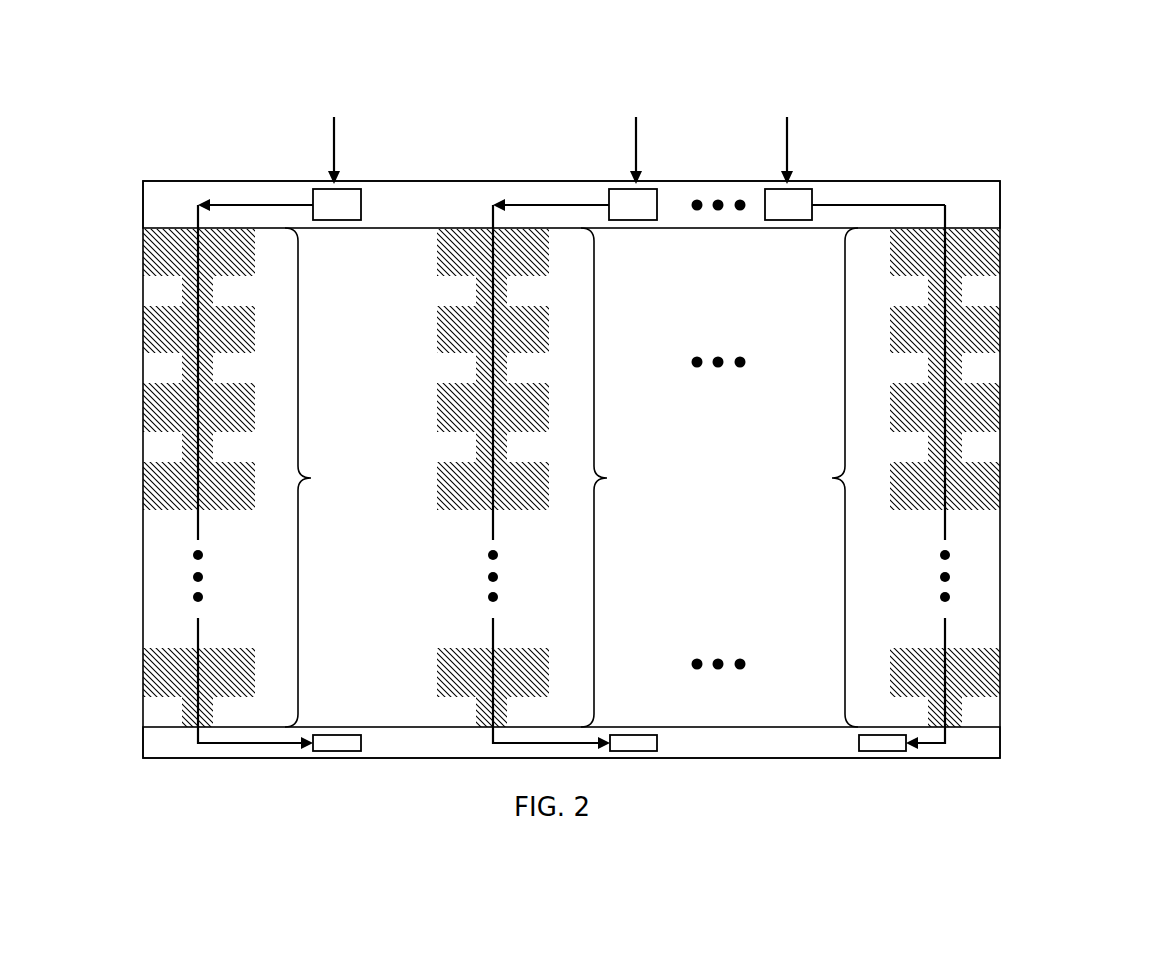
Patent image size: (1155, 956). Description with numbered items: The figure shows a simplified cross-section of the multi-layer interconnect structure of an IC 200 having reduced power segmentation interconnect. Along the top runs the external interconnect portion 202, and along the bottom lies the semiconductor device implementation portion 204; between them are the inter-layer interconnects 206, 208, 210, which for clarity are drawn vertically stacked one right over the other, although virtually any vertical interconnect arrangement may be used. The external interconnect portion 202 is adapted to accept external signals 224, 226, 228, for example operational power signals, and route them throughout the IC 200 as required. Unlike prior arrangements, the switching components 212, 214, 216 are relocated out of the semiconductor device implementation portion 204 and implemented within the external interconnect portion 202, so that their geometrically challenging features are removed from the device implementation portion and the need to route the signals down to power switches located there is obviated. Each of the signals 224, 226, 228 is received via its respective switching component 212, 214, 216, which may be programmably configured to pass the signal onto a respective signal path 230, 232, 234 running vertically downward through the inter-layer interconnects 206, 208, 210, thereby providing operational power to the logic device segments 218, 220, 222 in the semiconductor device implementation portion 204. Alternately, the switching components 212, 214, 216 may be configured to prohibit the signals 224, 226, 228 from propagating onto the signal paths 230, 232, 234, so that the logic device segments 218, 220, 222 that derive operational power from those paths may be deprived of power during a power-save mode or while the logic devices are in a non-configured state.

The IC 200 is at (1047, 228).
The external interconnect portion 202 is at (148, 211).
The semiconductor device implementation portion 204 is at (152, 743).
The inter-layer interconnect 206 is at (251, 477).
The inter-layer interconnect 208 is at (545, 477).
The inter-layer interconnect 210 is at (892, 477).
The switching component 212 is at (279, 204).
The switching component 214 is at (575, 204).
The switching component 216 is at (855, 204).
The logic device segment 218 is at (361, 744).
The logic device segment 220 is at (657, 744).
The logic device segment 222 is at (859, 744).
The external signal 224 is at (334, 128).
The external signal 226 is at (636, 128).
The external signal 228 is at (787, 128).
The signal path 230 is at (198, 622).
The signal path 232 is at (493, 622).
The signal path 234 is at (945, 636).